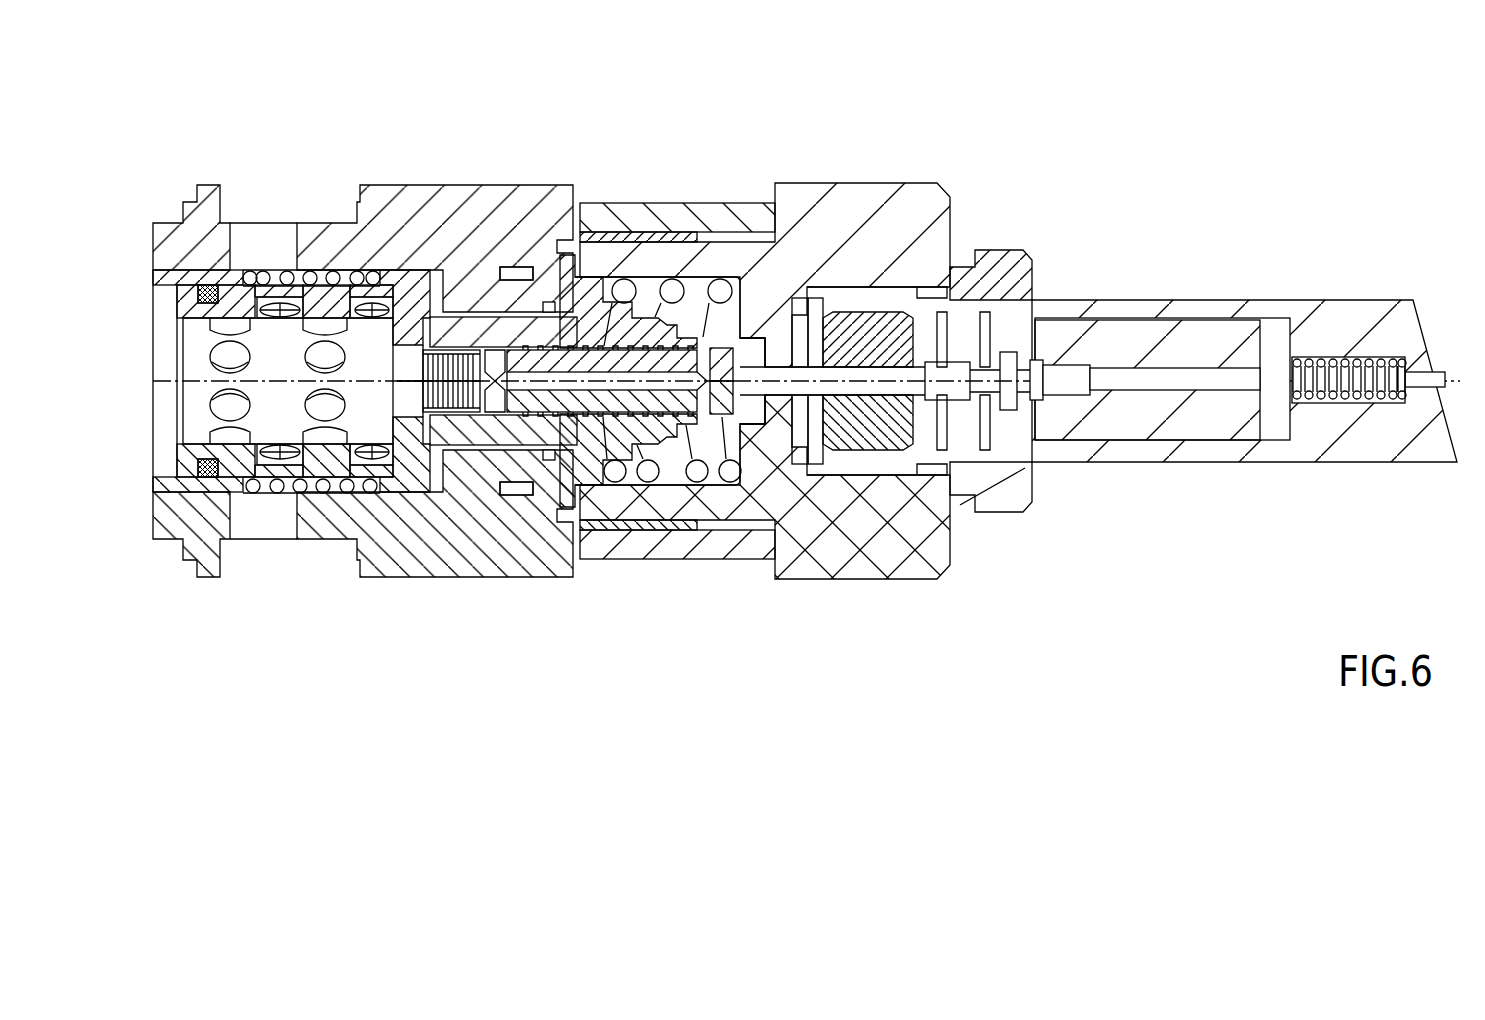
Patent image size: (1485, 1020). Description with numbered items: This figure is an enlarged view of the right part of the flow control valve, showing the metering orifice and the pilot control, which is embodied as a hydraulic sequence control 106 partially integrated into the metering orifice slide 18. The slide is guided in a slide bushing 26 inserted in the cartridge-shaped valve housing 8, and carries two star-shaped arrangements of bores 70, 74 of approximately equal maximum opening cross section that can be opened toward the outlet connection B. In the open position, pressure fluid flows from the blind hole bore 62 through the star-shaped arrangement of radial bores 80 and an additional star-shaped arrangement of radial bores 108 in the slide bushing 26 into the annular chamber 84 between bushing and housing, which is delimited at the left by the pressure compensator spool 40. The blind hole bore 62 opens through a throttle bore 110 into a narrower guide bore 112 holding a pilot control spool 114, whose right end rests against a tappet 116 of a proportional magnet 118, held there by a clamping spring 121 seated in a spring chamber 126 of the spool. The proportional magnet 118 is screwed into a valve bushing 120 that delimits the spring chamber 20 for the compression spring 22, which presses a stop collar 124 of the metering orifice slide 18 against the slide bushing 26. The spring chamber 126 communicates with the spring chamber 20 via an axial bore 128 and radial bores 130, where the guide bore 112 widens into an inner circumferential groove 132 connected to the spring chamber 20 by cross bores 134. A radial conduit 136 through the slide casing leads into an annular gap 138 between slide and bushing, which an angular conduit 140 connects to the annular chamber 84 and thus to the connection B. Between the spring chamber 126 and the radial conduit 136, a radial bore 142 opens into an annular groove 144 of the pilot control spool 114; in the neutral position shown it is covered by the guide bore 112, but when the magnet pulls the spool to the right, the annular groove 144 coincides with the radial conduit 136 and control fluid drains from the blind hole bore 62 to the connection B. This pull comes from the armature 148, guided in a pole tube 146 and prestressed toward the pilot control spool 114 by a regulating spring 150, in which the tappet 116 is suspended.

The valve housing 8 is at (190, 213).
The star-shaped arrangement of bores 70 is at (235, 316).
The star-shaped arrangement of radial bores 80 is at (267, 270).
The star-shaped arrangement of bores 74 is at (322, 327).
The star-shaped arrangement of radial bores 108 is at (393, 268).
The angular conduit 140 is at (467, 349).
The spring chamber 126 is at (492, 268).
The radial conduit 136 is at (513, 280).
The slide bushing 26 is at (545, 262).
The annular gap 138 is at (617, 235).
The spring chamber 20 is at (653, 282).
The inner circumferential groove 132 is at (677, 328).
The compression spring 22 is at (727, 330).
The cross bores 134 is at (820, 300).
The valve bushing 120 is at (892, 205).
The armature 148 is at (1160, 330).
The regulating spring 150 is at (1345, 358).
The pressure compensator spool 40 is at (160, 492).
The blind hole bore 62 is at (227, 513).
The outlet connection B is at (245, 495).
The annular chamber 84 is at (282, 480).
The throttle bore 110 is at (335, 447).
The metering orifice slide 18 is at (385, 440).
The clamping spring 121 is at (450, 413).
The radial bore 142 is at (495, 395).
The guide bore 112 is at (548, 412).
The stop collar 124 is at (585, 418).
The pilot control spool 114 is at (660, 430).
The axial bore 128 is at (700, 480).
The radial bores 130 is at (730, 396).
The tappet 116 is at (748, 400).
The sequence control 106 is at (905, 450).
The proportional magnet 118 is at (1118, 462).
The pole tube 146 is at (1212, 462).
The annular groove 144 is at (422, 403).